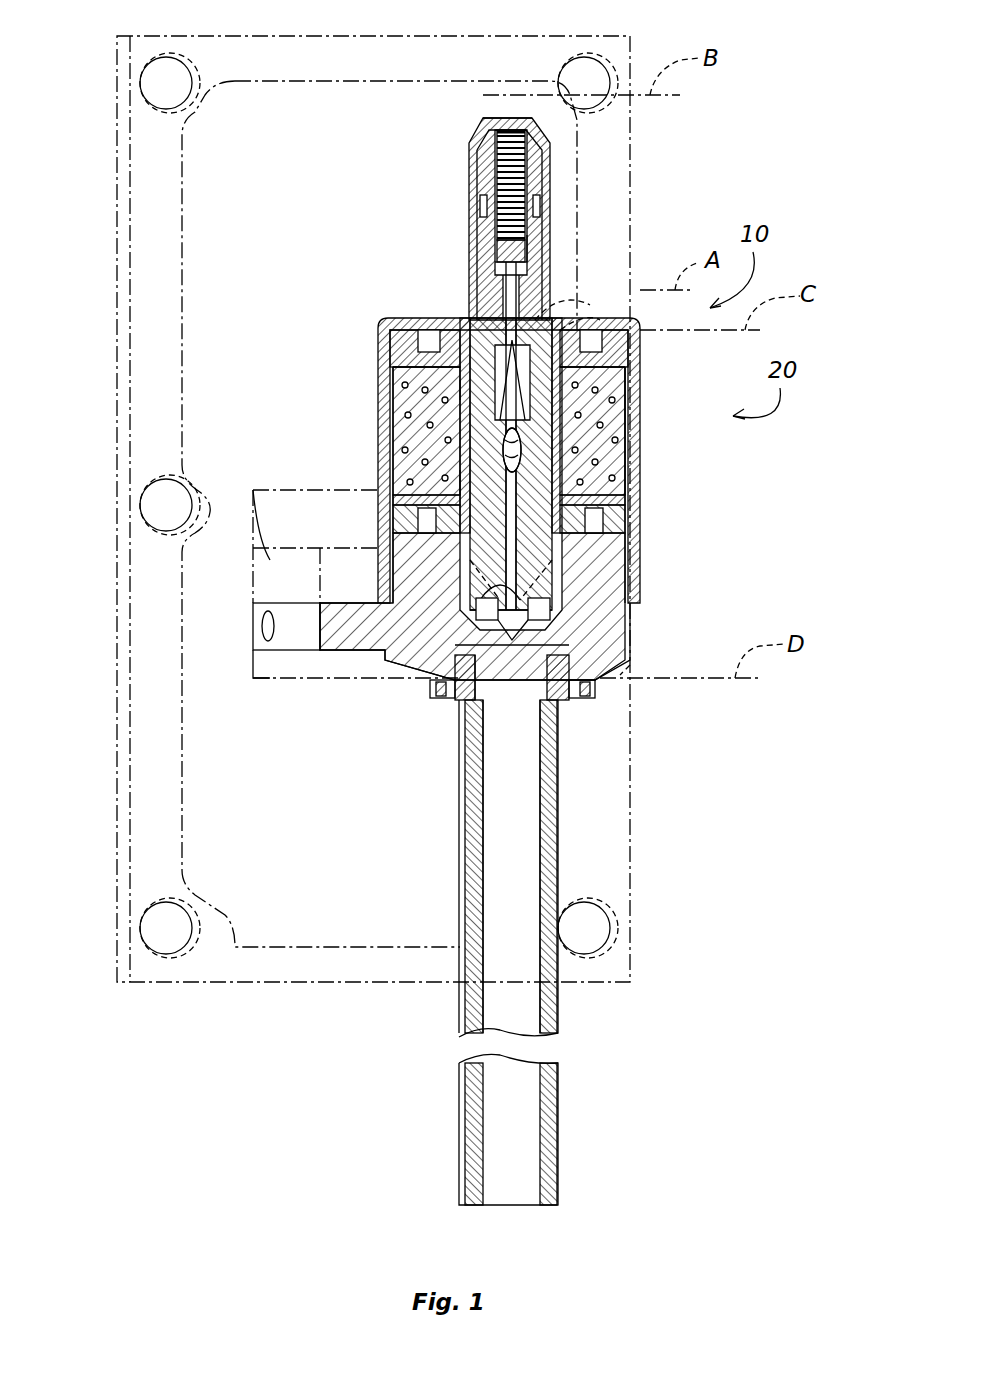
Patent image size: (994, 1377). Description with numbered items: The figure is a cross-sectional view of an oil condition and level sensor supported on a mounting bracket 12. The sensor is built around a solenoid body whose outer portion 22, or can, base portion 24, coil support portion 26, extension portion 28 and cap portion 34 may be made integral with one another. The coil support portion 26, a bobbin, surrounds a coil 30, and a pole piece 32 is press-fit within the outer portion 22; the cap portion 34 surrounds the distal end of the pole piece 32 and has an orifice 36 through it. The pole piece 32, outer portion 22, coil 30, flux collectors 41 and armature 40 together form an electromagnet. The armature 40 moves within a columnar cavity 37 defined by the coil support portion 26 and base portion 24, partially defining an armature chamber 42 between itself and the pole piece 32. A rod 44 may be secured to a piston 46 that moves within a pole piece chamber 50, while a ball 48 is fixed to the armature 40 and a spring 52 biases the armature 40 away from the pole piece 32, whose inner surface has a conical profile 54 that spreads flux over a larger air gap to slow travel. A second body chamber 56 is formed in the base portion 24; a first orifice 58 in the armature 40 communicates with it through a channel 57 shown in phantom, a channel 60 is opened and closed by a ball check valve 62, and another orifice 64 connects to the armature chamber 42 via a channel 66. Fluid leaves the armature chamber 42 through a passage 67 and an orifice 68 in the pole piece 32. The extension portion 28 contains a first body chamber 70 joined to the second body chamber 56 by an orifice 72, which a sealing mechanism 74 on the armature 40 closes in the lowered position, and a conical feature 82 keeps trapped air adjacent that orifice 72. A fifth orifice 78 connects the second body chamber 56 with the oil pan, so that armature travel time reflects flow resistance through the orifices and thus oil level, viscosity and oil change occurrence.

The mounting bracket 12 is at (100, 340).
The outer portion 22 is at (640, 355).
The base portion 24 is at (640, 630).
The coil support portion 26 is at (600, 480).
The extension portion 28 is at (465, 1005).
The coil 30 is at (590, 440).
The pole piece 32 is at (540, 265).
The cap portion 34 is at (550, 140).
The orifice 36 is at (515, 117).
The columnar cavity 37 is at (612, 470).
The armature 40 is at (555, 545).
The flux collector 41 is at (610, 520).
The armature chamber 42 is at (600, 388).
The rod 44 is at (520, 290).
The piston 46 is at (540, 250).
The ball 48 is at (460, 410).
The pole piece chamber 50 is at (497, 140).
The spring 52 is at (505, 165).
The conical profile 54 is at (468, 345).
The second body chamber 56 is at (560, 580).
The channel 57 is at (472, 606).
The first orifice 58 is at (478, 590).
The channel 60 is at (505, 600).
The ball check valve 62 is at (470, 482).
The orifice 64 is at (470, 390).
The channel 66 is at (503, 450).
The passage 67 is at (590, 312).
The orifice 68 is at (555, 310).
The first body chamber 70 is at (555, 735).
The orifice 72 is at (440, 697).
The sealing mechanism 74 is at (590, 665).
The fifth orifice 78 is at (630, 665).
The conical feature 82 is at (480, 692).